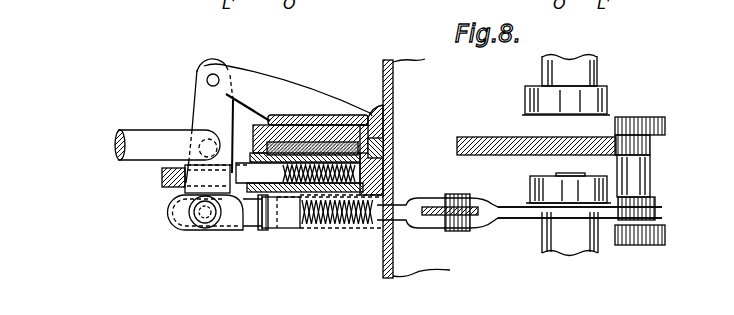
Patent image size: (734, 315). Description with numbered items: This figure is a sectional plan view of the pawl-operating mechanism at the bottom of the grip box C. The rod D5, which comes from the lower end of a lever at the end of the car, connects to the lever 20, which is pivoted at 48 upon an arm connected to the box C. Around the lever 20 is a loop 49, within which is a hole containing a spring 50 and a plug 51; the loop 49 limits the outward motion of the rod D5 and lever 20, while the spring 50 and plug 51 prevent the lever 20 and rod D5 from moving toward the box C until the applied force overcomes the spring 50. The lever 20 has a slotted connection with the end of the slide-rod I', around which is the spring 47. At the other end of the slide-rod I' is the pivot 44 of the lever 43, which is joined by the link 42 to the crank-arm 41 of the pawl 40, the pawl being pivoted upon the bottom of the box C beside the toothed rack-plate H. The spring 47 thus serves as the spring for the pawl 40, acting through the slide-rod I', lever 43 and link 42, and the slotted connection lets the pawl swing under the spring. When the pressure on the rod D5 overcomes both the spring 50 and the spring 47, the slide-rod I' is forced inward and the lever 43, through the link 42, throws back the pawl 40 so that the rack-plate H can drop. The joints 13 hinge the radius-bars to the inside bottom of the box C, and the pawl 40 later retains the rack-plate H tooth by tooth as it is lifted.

The pivot 48 is at (206, 81).
The lever 20 is at (217, 131).
The rod D5 is at (165, 150).
The loop 49 is at (162, 178).
The plug 51 is at (309, 151).
The spring 50 is at (284, 180).
The box C is at (394, 105).
The slide-rod I' is at (415, 213).
The spring 47 is at (326, 231).
The lever 43 is at (437, 205).
The pivot 44 is at (448, 232).
The link 42 is at (520, 219).
The rack-plate H is at (505, 137).
The joints 13 is at (560, 118).
The pawl 40 is at (652, 147).
The crank-arm 41 is at (657, 199).